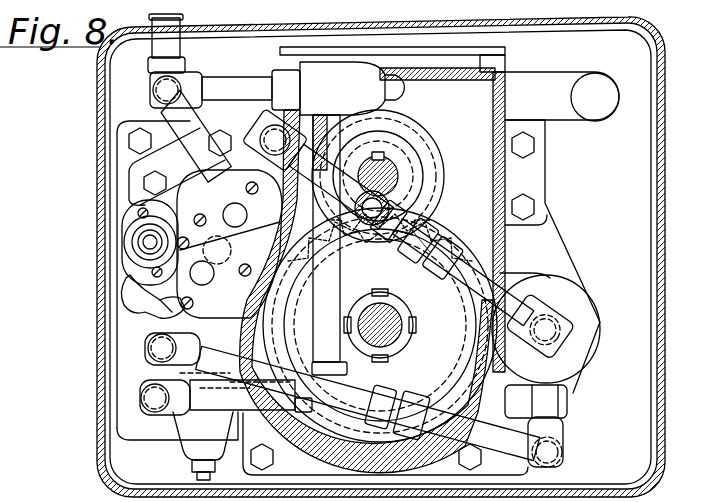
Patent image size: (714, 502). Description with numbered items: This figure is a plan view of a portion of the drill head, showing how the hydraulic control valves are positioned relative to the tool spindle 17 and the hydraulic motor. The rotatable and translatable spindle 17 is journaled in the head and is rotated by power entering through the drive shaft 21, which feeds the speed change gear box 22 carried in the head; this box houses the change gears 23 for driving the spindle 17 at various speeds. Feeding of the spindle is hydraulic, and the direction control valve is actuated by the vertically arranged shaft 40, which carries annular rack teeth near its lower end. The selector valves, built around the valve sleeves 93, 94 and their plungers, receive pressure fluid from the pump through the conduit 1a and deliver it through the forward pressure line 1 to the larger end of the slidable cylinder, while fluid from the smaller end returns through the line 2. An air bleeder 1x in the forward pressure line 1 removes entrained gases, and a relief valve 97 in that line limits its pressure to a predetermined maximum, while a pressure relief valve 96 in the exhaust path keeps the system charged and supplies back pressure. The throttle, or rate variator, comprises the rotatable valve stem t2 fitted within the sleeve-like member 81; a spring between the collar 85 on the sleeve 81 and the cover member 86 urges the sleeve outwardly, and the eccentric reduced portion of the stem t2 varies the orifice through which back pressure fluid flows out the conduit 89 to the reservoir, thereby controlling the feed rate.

The forward pressure line 1 is at (528, 298).
The conduit 1a is at (175, 48).
The air bleeder 1x is at (417, 203).
The line 2 is at (143, 352).
The spindle 17 is at (400, 328).
The drive shaft 21 is at (387, 157).
The speed change gear box 22 is at (663, 203).
The change gears 23 is at (420, 205).
The shaft 40 is at (238, 232).
The sleeve-like member 81 is at (140, 244).
The collar 85 is at (148, 242).
The cover member 86 is at (122, 222).
The conduit 89 is at (123, 287).
The valve sleeve 93 is at (229, 244).
The valve sleeve 94 is at (214, 273).
The pressure relief valve 96 is at (226, 426).
The relief valve 97 is at (303, 88).
The rotatable valve stem t2 is at (150, 242).